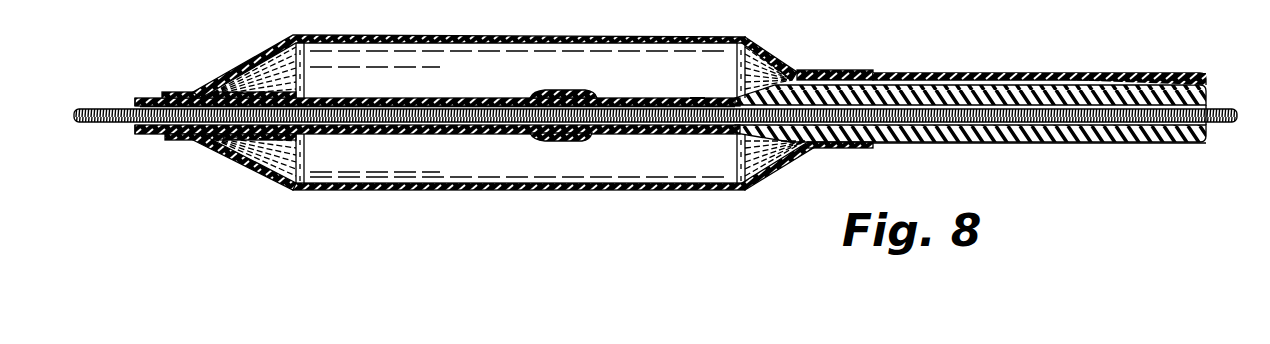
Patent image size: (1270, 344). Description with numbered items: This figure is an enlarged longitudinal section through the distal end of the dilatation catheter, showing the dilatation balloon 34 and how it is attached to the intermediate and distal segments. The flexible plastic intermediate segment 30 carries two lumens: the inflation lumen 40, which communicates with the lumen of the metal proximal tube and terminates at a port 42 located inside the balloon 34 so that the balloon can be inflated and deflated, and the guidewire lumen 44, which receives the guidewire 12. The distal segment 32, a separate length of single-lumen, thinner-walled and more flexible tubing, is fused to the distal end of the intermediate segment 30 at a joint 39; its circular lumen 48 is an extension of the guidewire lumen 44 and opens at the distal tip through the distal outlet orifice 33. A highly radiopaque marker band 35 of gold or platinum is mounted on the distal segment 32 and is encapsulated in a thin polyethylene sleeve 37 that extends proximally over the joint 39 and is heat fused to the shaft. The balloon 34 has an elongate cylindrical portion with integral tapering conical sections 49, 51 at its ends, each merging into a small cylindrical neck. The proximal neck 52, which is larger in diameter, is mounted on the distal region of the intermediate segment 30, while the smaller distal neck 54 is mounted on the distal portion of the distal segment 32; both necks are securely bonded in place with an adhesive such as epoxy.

The guidewire 12 is at (1220, 135).
The intermediate segment 30 is at (957, 135).
The distal segment 32 is at (371, 134).
The distal outlet orifice 33 is at (135, 130).
The dilatation balloon 34 is at (678, 35).
The radiopaque marker band 35 is at (545, 136).
The sleeve 37 is at (600, 92).
The joint 39 is at (697, 103).
The inflation lumen 40 is at (993, 85).
The port 42 is at (758, 82).
The guidewire lumen 44 is at (1008, 125).
The lumen 48 is at (493, 110).
The conical section 49 is at (773, 172).
The conical section 51 is at (267, 172).
The proximal neck 52 is at (853, 146).
The distal neck 54 is at (188, 137).